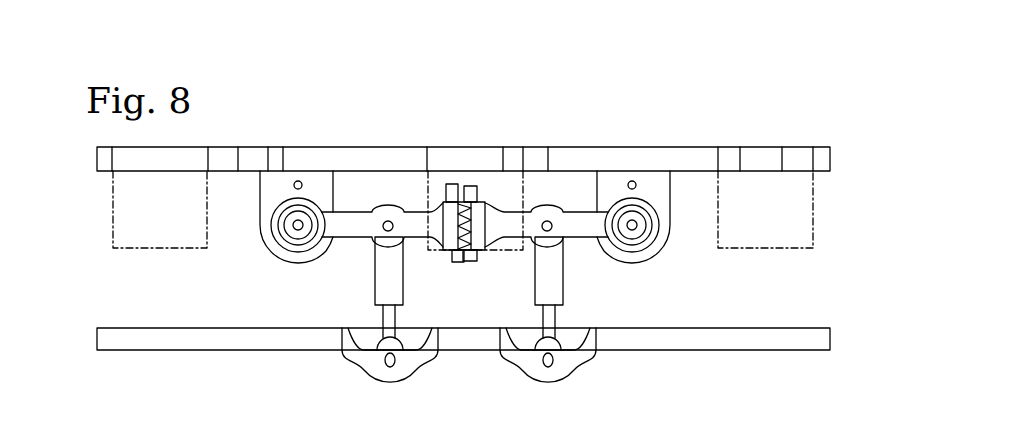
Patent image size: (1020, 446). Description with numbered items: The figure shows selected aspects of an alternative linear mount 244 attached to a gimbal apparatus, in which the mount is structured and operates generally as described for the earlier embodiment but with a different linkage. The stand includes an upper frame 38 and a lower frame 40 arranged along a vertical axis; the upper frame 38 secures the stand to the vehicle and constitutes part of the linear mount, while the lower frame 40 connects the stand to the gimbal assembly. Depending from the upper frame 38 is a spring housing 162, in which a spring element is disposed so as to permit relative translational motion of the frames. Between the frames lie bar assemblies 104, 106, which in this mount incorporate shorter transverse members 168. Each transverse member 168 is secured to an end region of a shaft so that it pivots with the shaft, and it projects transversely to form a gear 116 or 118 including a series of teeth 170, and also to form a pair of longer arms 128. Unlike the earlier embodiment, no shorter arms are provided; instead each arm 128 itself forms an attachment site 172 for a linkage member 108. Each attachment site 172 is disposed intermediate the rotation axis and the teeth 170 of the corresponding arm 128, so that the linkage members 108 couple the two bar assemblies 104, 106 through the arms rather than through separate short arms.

The upper frame 38 is at (97, 163).
The lower frame 40 is at (97, 340).
The bar assembly 104 is at (439, 203).
The bar assembly 106 is at (683, 290).
The linkage member 108 is at (375, 293).
The gear 116 is at (416, 252).
The gear 118 is at (511, 252).
The longer arm 128 is at (362, 239).
The spring housing 162 is at (770, 250).
The transverse member 168 is at (347, 202).
The teeth 170 is at (452, 175).
The attachment site 172 is at (389, 203).
The linear mount 244 is at (126, 285).